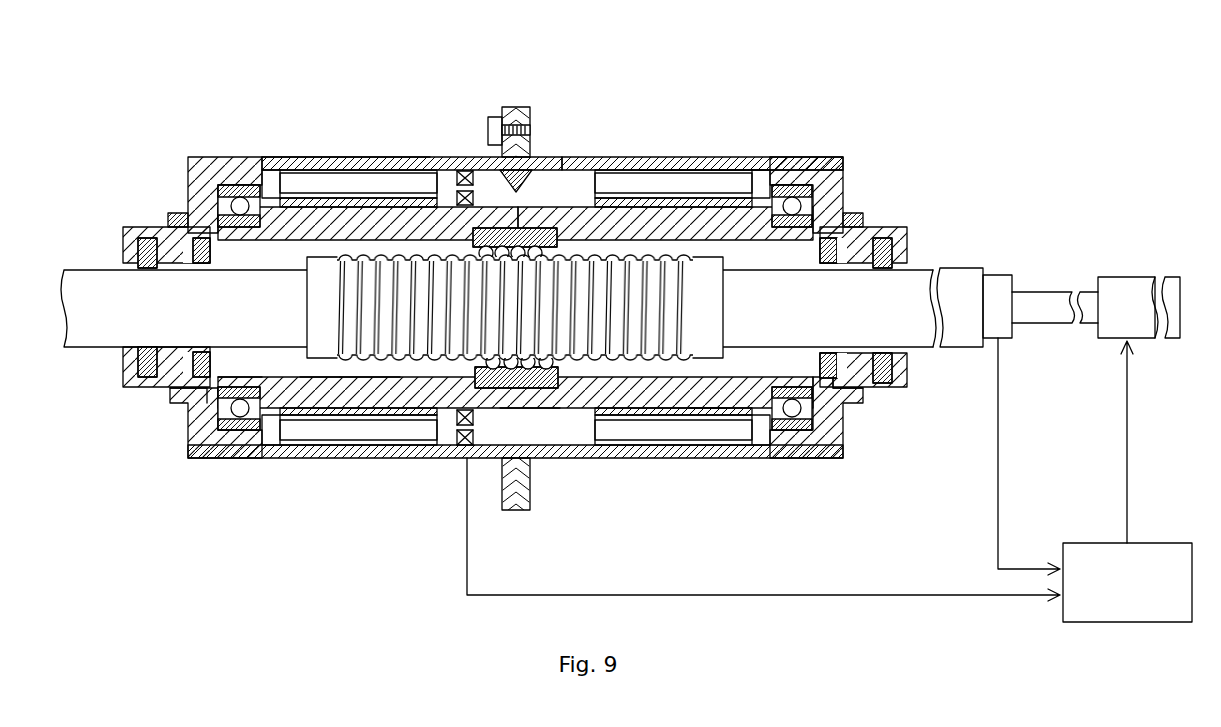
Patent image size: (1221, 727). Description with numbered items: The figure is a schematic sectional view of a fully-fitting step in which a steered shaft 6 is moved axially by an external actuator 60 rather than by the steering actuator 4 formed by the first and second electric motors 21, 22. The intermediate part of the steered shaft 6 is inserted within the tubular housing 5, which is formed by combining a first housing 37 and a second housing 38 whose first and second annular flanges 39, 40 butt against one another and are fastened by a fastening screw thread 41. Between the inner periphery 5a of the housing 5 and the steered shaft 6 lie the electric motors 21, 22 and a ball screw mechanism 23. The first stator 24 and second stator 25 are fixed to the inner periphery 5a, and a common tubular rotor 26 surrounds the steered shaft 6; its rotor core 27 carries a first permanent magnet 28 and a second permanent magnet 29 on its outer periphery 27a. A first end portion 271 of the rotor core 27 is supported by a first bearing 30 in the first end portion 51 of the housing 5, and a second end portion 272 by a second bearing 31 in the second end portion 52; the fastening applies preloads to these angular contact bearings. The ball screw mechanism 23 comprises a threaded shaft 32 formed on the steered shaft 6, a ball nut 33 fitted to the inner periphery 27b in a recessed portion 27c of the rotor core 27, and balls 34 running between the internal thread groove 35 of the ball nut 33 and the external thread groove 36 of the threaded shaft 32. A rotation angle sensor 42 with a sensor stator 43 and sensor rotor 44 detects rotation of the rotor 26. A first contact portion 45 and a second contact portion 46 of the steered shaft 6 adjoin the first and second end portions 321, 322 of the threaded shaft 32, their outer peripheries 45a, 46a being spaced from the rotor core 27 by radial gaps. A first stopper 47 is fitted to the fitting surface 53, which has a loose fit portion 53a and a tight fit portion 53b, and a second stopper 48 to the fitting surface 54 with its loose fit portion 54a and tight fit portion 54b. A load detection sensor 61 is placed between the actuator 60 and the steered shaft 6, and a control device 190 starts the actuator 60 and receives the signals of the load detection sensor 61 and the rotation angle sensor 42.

The steering actuator 4 is at (347, 152).
The housing 5 is at (683, 148).
The inner periphery 5a is at (563, 440).
The steered shaft 6 is at (960, 247).
The first electric motor 21 is at (325, 158).
The second electric motor 22 is at (712, 157).
The ball screw mechanism 23 is at (529, 186).
The first stator 24 is at (382, 185).
The second stator 25 is at (636, 183).
The rotor 26 is at (504, 421).
The rotor core 27 is at (383, 400).
The outer periphery 27a is at (257, 412).
The inner periphery 27b is at (370, 372).
The recessed portion 27c is at (533, 390).
The first end portion 271 is at (207, 410).
The second end portion 272 is at (810, 384).
The first permanent magnet 28 is at (416, 420).
The second permanent magnet 29 is at (657, 412).
The first bearing 30 is at (240, 420).
The second bearing 31 is at (793, 415).
The threaded shaft 32 is at (536, 377).
The first end portion 321 is at (337, 362).
The second end portion 322 is at (702, 350).
The ball nut 33 is at (460, 420).
The balls 34 is at (557, 372).
The thread groove 35 is at (557, 245).
The thread groove 36 is at (670, 307).
The first housing 37 is at (412, 170).
The second housing 38 is at (597, 178).
The first annular flange 39 is at (508, 110).
The second annular flange 40 is at (520, 108).
The fastening screw thread 41 is at (495, 125).
The rotation angle sensor 42 is at (445, 125).
The sensor stator 43 is at (463, 172).
The sensor rotor 44 is at (458, 192).
The first contact portion 45 is at (313, 250).
The outer periphery 45a is at (318, 372).
The second contact portion 46 is at (717, 262).
The outer periphery 46a is at (708, 362).
The first stopper 47 is at (199, 258).
The second stopper 48 is at (822, 262).
The first end portion 51 is at (172, 395).
The second end portion 52 is at (862, 398).
The fitting surface 53 is at (169, 193).
The loose fit portion 53a is at (174, 208).
The tight fit portion 53b is at (150, 245).
The fitting surface 54 is at (860, 193).
The loose fit portion 54a is at (830, 240).
The tight fit portion 54b is at (882, 245).
The actuator 60 is at (1127, 280).
The load detection sensor 61 is at (998, 278).
The control device 190 is at (1148, 615).